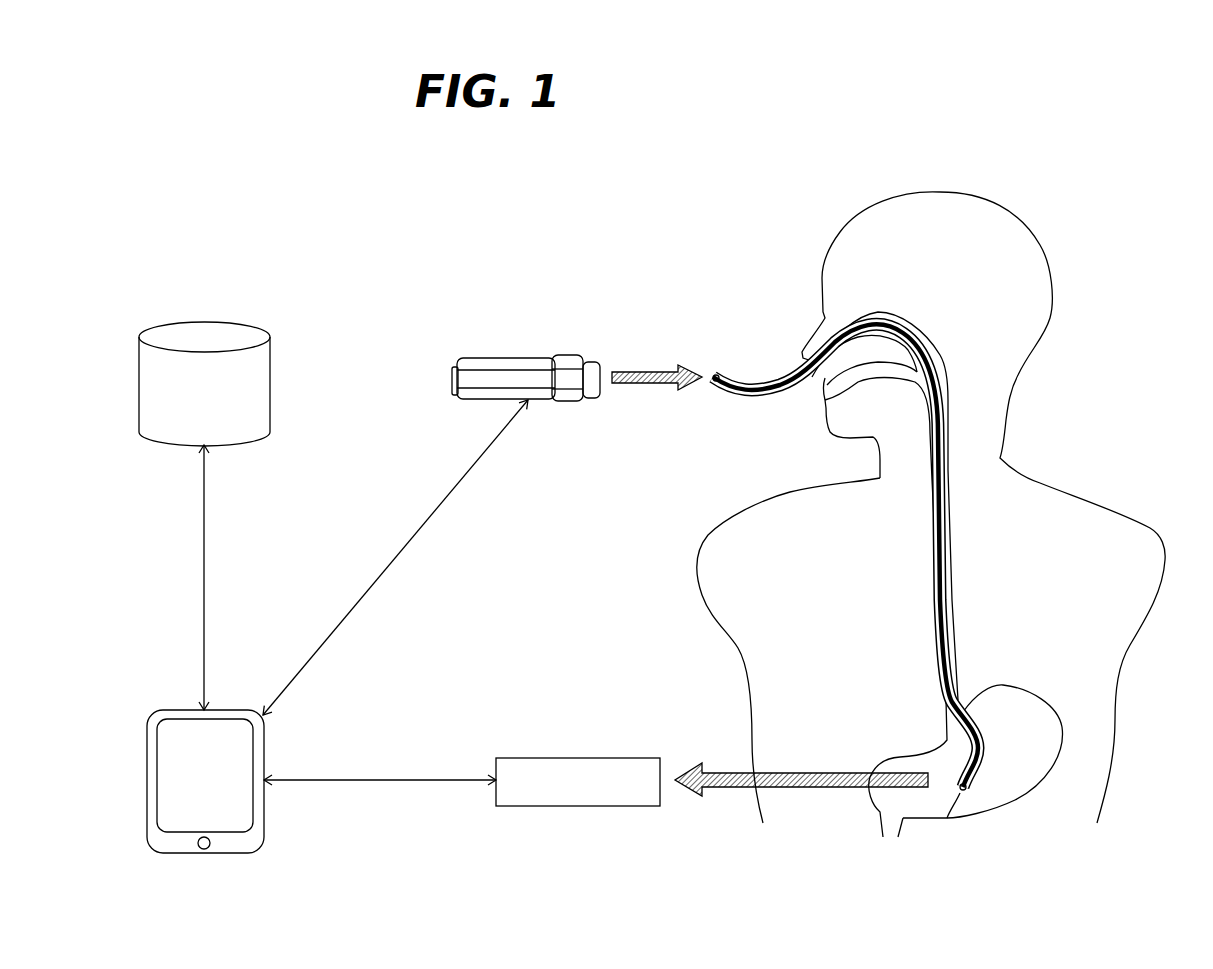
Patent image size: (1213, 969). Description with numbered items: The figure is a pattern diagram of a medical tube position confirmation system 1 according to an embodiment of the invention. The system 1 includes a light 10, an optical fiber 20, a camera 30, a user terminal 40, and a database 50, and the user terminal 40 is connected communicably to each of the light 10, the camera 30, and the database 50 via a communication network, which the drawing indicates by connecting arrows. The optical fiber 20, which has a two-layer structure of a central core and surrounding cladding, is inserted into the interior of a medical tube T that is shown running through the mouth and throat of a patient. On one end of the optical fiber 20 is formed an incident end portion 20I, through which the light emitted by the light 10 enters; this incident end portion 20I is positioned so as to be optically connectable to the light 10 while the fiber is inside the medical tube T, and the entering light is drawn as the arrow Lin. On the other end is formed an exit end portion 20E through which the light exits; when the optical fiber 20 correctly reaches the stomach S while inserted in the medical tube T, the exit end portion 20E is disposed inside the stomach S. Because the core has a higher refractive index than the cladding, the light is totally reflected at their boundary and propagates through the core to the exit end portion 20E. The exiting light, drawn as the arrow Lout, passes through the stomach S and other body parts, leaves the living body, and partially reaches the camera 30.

The medical tube position confirmation system 1 is at (506, 232).
The light 10 is at (530, 358).
The optical fiber 20 is at (770, 396).
The incident end portion 20I is at (707, 381).
The exit end portion 20E is at (958, 795).
The camera 30 is at (592, 758).
The user terminal 40 is at (147, 780).
The database 50 is at (139, 400).
The medical tube T is at (779, 378).
The stomach S is at (1003, 685).
The incident light Lin is at (657, 392).
The emitted light Lout is at (801, 763).